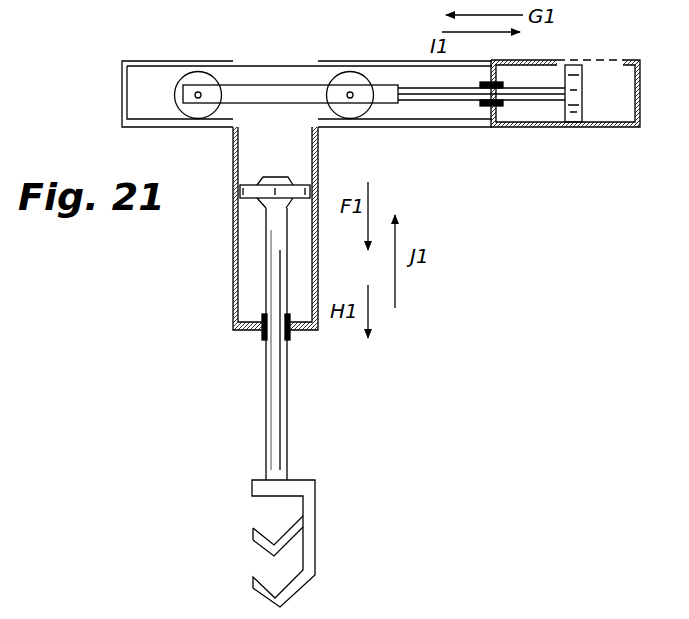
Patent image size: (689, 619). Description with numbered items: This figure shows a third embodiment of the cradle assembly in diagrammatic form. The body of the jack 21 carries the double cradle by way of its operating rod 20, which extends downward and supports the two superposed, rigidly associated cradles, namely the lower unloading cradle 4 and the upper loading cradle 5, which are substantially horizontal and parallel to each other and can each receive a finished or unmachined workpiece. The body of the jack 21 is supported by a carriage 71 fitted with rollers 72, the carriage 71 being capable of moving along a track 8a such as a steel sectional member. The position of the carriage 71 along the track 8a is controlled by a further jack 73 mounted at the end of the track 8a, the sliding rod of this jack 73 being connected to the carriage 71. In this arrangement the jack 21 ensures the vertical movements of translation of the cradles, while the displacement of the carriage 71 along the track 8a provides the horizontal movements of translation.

The track 8a is at (148, 62).
The carriage 71 is at (238, 93).
The rollers 72 is at (345, 73).
The jack 73 is at (556, 60).
The jack 21 is at (233, 248).
The operating rod 20 is at (282, 412).
The upper loading cradle 5 is at (268, 535).
The lower unloading cradle 4 is at (258, 591).